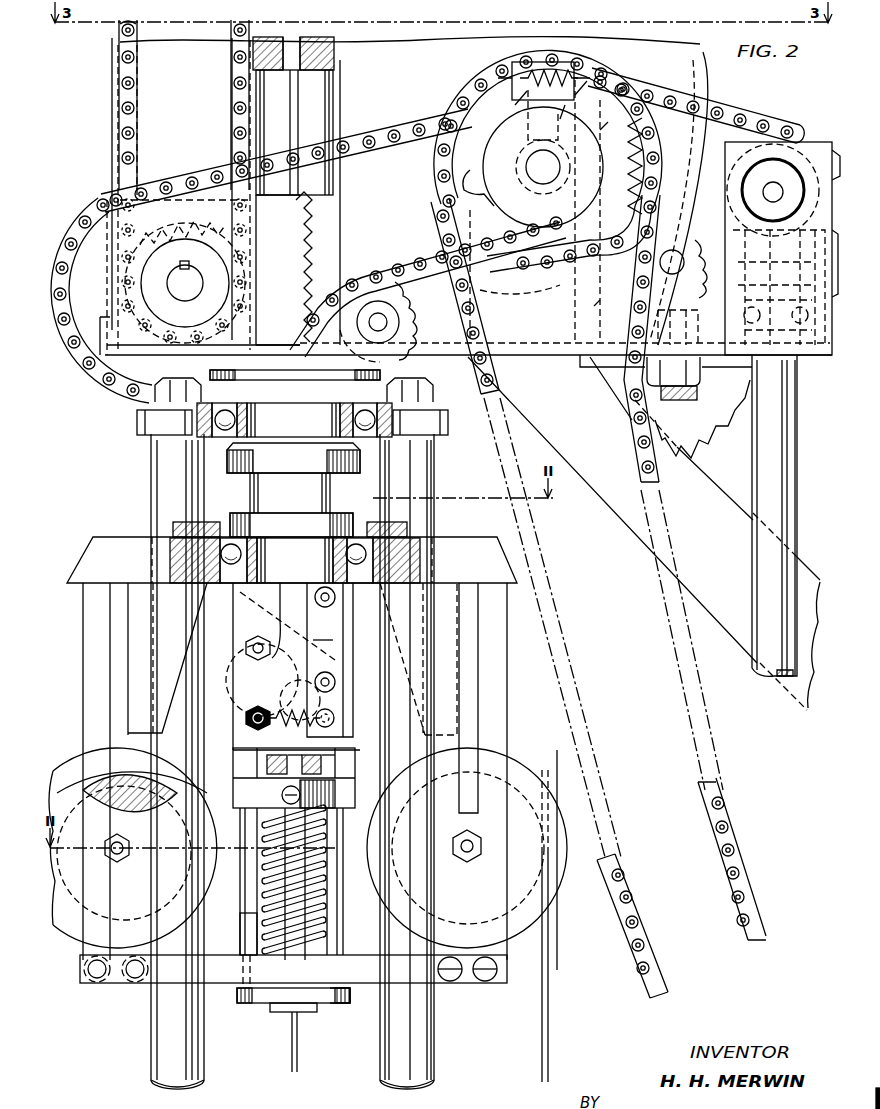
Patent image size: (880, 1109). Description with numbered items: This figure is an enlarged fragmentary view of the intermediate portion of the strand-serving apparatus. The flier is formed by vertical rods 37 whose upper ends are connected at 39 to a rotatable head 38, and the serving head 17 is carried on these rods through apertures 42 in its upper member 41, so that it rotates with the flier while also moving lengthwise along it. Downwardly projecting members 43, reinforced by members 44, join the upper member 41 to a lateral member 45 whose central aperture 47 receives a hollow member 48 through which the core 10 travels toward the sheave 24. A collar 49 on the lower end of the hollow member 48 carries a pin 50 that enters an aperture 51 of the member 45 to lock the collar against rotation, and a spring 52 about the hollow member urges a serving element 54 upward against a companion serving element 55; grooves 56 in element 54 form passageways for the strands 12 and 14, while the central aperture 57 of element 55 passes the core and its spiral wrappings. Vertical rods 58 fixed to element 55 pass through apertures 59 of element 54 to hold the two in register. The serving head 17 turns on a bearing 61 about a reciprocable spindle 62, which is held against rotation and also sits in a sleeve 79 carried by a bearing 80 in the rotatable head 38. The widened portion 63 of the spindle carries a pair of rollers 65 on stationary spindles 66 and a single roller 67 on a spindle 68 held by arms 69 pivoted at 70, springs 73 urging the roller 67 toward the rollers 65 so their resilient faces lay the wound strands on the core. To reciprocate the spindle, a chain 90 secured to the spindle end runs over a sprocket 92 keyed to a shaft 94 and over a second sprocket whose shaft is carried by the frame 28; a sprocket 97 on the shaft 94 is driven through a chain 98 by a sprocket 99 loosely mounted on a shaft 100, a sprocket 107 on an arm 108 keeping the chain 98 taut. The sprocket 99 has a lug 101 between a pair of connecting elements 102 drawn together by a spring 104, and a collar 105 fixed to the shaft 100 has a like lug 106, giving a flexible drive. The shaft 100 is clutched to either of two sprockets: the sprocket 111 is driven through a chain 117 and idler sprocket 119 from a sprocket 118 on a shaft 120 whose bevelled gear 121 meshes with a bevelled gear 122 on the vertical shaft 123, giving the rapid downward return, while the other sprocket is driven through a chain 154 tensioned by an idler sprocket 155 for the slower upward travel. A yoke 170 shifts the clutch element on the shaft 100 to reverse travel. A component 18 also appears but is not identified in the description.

The core 10 is at (296, 1054).
The strand 12 is at (542, 1002).
The strand 14 is at (136, 776).
The serving head 17 is at (83, 642).
The roller 18 is at (78, 936).
The sheave 24 is at (436, 48).
The frame 28 is at (113, 142).
The rods 37 is at (151, 472).
The rotatable head 38 is at (138, 434).
The connection of rods to rotatable head 39 is at (174, 388).
The upper member 41 is at (142, 540).
The apertures 42 is at (155, 562).
The downwardly projecting members 43 is at (83, 690).
The reenforcing members 44 is at (115, 730).
The lateral member 45 is at (146, 982).
The central aperture 47 is at (270, 1004).
The hollow member 48 is at (306, 1006).
The collar 49 is at (337, 1000).
The pin 50 is at (242, 930).
The aperture 51 is at (240, 978).
The spring 52 is at (324, 914).
The serving element 54 is at (304, 779).
The companion serving element 55 is at (345, 751).
The grooves 56 is at (305, 755).
The central aperture 57 is at (310, 745).
The vertical rods 58 is at (242, 886).
The apertures 59 is at (304, 790).
The bearing 61 is at (359, 514).
The reciprocable spindle 62 is at (336, 84).
The widened portion 63 is at (244, 613).
The rollers 65 is at (242, 692).
The stationary spindles 66 is at (248, 652).
The roller 67 is at (340, 716).
The spindle 68 is at (323, 670).
The arms 69 is at (341, 616).
The pivot 70 is at (338, 596).
The springs 73 is at (294, 731).
The sleeve 79 is at (307, 449).
The bearing 80 is at (262, 430).
The chain 90 is at (122, 34).
The sprocket 92 is at (204, 236).
The shaft 94 is at (198, 293).
The sprocket 97 is at (96, 202).
The chain 98 is at (397, 126).
The sprocket 99 is at (506, 198).
The shaft 100 is at (544, 184).
The lug 101 is at (534, 167).
The connecting elements 102 is at (538, 118).
The spring 104 is at (544, 68).
The collar 105 is at (606, 136).
The lug 106 is at (574, 122).
The sprocket 107 is at (362, 274).
The arm 108 is at (382, 318).
The sprocket 111 is at (612, 175).
The chain 117 is at (734, 112).
The sprocket 118 is at (736, 228).
The idler sprocket 119 is at (583, 305).
The shaft 120 is at (773, 190).
The bevelled gear 121 is at (786, 166).
The bevelled gear 122 is at (686, 324).
The vertical shaft 123 is at (796, 476).
The chain 154 is at (615, 74).
The idler sprocket 155 is at (734, 430).
The yoke 170 is at (496, 290).